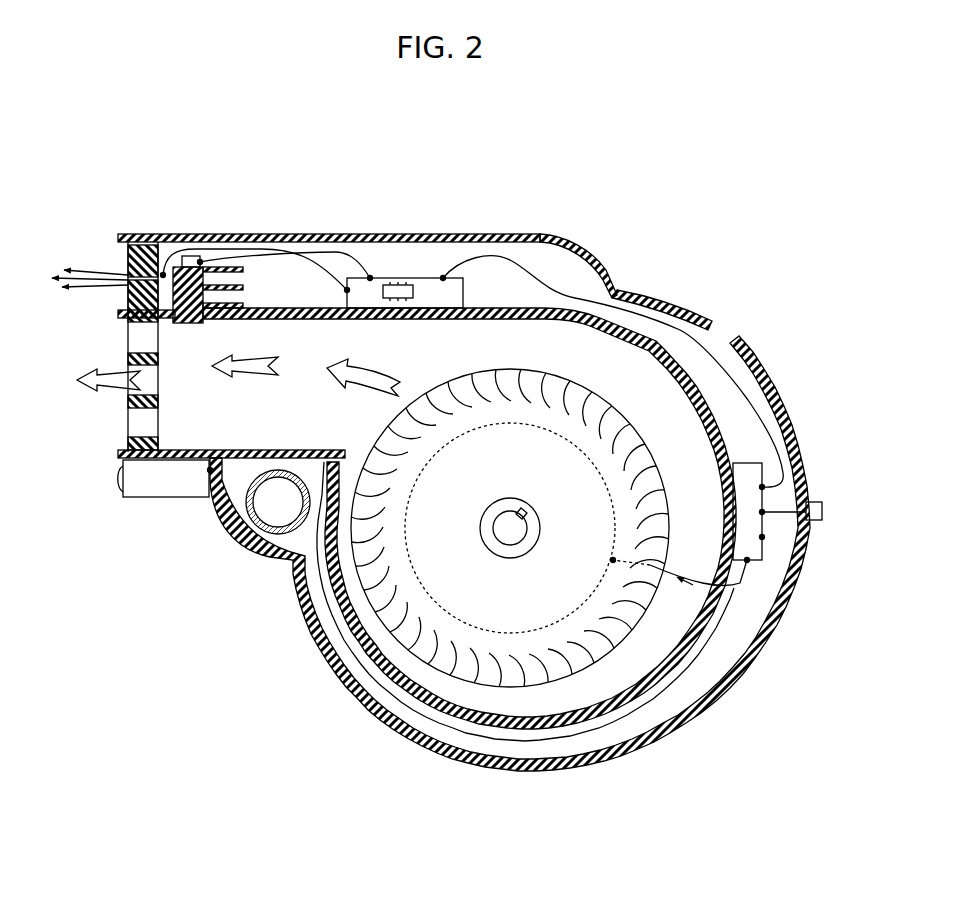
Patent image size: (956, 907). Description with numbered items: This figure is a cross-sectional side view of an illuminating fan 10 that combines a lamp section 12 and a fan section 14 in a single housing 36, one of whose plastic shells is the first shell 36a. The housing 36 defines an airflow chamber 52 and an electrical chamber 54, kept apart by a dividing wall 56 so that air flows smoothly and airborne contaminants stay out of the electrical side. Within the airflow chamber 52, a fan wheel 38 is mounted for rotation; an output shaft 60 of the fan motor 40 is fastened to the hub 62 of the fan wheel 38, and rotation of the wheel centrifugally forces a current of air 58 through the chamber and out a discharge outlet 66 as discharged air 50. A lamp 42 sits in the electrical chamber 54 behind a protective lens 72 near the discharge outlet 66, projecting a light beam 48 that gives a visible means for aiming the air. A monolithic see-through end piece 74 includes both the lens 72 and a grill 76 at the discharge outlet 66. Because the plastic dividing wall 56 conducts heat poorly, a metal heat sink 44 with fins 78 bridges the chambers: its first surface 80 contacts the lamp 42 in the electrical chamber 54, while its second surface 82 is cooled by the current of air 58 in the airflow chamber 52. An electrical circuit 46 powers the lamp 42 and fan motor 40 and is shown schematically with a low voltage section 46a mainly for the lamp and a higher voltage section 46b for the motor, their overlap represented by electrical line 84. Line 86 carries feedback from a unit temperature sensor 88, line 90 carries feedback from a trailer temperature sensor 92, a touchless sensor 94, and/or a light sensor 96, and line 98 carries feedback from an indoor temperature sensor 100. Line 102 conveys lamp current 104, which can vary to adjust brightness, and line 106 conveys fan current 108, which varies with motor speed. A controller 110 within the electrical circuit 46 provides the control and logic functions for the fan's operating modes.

The illuminating fan 10 is at (731, 159).
The lamp section 12 is at (95, 306).
The fan section 14 is at (91, 413).
The housing 36 is at (603, 254).
The first shell 36a is at (688, 310).
The fan wheel 38 is at (573, 688).
The fan motor 40 is at (578, 615).
The lamp 42 is at (170, 312).
The heat sink 44 is at (187, 325).
The electrical circuit 46 is at (443, 278).
The low voltage section 46a is at (428, 278).
The higher voltage section 46b is at (763, 538).
The light beam 48 is at (80, 272).
The air 50 is at (93, 384).
The airflow chamber 52 is at (301, 421).
The electrical chamber 54 is at (479, 292).
The dividing wall 56 is at (320, 319).
The current of air 58 is at (245, 372).
The output shaft 60 is at (512, 545).
The hub 62 is at (480, 533).
The discharge outlet 66 is at (140, 432).
The lens 72 is at (128, 258).
The end piece 74 is at (130, 293).
The grill 76 is at (128, 361).
The fins 78 is at (262, 300).
The first surface 80 is at (163, 275).
The second surface 82 is at (188, 325).
The electrical line 84 is at (700, 343).
The line 86 is at (232, 262).
The unit temperature sensor 88 is at (192, 256).
The line 90 is at (323, 648).
The trailer temperature sensor 92 is at (142, 497).
The touchless sensor 94 is at (165, 497).
The light sensor 96 is at (190, 497).
The line 98 is at (805, 520).
The indoor temperature sensor 100 is at (816, 502).
The line 102 is at (370, 278).
The lamp current 104 is at (323, 260).
The line 106 is at (737, 585).
The fan current 108 is at (691, 587).
The controller 110 is at (400, 283).